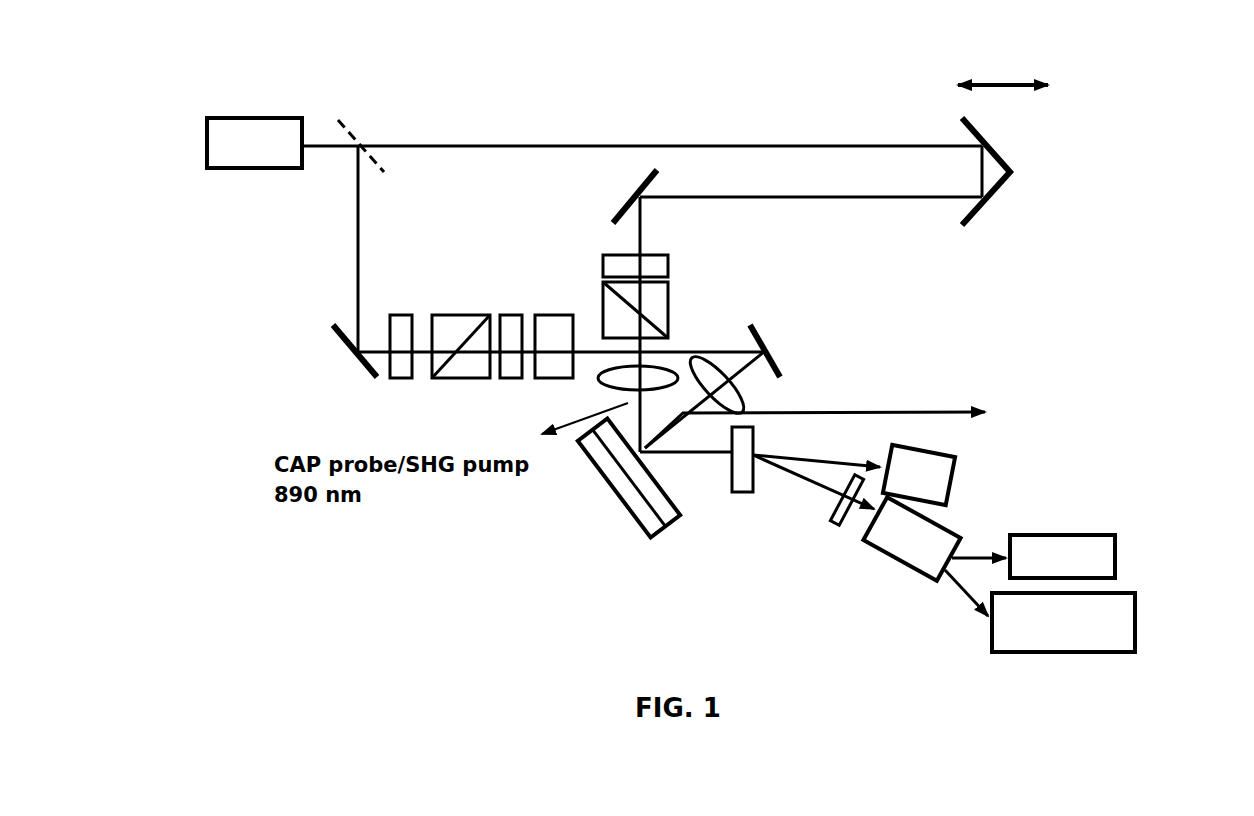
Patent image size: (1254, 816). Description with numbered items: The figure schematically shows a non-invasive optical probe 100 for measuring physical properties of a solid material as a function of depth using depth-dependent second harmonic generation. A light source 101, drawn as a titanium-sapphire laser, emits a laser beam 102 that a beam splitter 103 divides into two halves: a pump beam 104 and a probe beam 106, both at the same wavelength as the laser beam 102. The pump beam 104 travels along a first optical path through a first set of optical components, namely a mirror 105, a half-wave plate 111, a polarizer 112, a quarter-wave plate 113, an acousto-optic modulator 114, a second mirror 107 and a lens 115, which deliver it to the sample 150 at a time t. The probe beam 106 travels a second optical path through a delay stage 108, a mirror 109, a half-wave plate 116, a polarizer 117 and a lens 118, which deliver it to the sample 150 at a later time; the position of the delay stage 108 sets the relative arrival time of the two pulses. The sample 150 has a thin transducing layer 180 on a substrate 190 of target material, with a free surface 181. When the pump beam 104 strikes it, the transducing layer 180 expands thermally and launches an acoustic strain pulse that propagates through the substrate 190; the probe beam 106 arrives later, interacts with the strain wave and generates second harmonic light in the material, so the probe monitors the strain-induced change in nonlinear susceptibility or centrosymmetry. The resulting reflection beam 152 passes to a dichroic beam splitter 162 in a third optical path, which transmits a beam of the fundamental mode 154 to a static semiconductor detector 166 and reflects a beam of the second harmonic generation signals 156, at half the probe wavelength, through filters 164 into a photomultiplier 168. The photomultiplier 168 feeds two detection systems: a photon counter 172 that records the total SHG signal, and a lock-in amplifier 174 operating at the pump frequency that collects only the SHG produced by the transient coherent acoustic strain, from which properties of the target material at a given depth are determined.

The non-invasive optical probe 100 is at (258, 358).
The light source 101 is at (258, 118).
The laser beam 102 is at (323, 150).
The beam splitter 103 is at (360, 130).
The pump beam 104 is at (358, 250).
The mirror 105 is at (345, 347).
The probe beam 106 is at (462, 146).
The mirror 107 is at (766, 350).
The delay stage 108 is at (1003, 80).
The mirror 109 is at (627, 202).
The half-wave plate 111 is at (398, 313).
The polarizer 112 is at (456, 313).
The quarter-wave plate 113 is at (511, 313).
The acousto-optic modulator 114 is at (553, 306).
The lens 115 is at (742, 406).
The half-wave plate 116 is at (668, 268).
The polarizer 117 is at (668, 300).
The lens 118 is at (613, 392).
The sample 150 is at (629, 501).
The reflection beam 152 is at (690, 456).
The beam of the fundamental mode 154 is at (848, 460).
The beam of the second harmonic generation signals 156 is at (798, 488).
The dichroic beam splitter 162 is at (745, 507).
The filters 164 is at (838, 527).
The static semiconductor detector 166 is at (941, 449).
The photomultiplier 168 is at (884, 552).
The photon counter 172 is at (1135, 628).
The lock-in amplifier 174 is at (1115, 565).
The transducing layer 180 is at (640, 486).
The free surface 181 is at (682, 493).
The substrate 190 is at (607, 464).